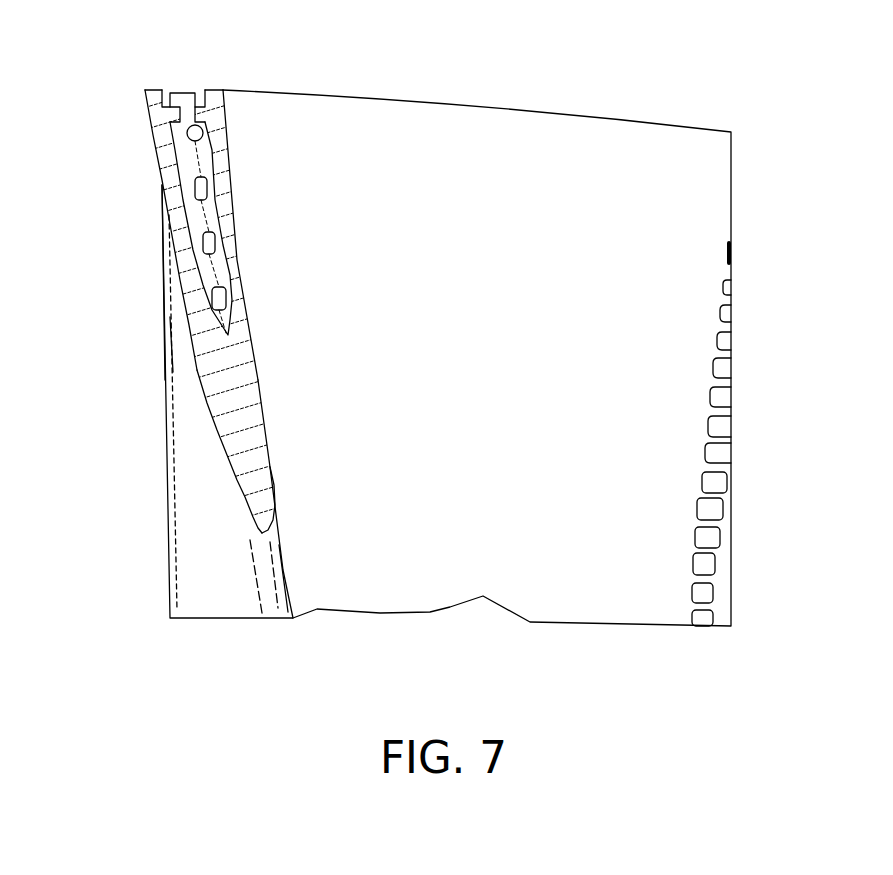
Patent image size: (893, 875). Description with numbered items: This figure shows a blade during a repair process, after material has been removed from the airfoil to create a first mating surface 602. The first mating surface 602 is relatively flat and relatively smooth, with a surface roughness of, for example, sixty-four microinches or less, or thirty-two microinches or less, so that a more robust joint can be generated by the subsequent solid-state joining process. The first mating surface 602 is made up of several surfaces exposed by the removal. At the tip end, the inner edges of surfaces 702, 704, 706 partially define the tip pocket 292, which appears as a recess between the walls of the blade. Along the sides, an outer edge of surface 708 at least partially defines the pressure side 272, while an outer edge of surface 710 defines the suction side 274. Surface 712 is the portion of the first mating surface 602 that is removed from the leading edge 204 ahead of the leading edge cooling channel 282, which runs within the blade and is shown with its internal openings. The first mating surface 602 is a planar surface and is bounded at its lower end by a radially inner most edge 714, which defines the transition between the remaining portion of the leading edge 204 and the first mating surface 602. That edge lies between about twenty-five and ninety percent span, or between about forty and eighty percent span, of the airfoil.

The leading edge 204 is at (273, 555).
The pressure side 272 is at (230, 198).
The suction side 274 is at (173, 197).
The leading edge cooling channel 282 is at (202, 218).
The tip pocket 292 is at (190, 100).
The first mating surface 602 is at (243, 412).
The surface 702 is at (155, 100).
The surface 704 is at (217, 96).
The surface 706 is at (172, 113).
The surface 708 is at (232, 250).
The surface 710 is at (182, 241).
The surface 712 is at (233, 378).
The radially inner most edge 714 is at (268, 522).